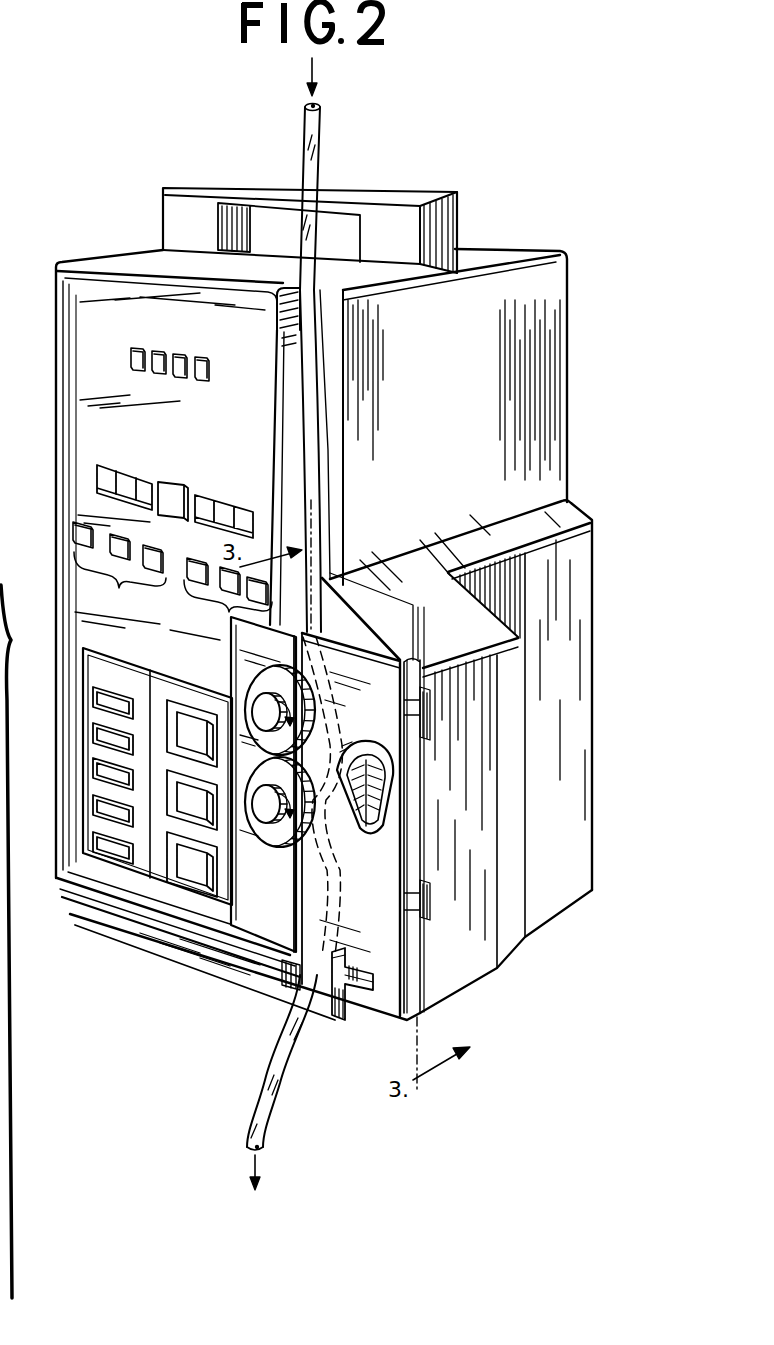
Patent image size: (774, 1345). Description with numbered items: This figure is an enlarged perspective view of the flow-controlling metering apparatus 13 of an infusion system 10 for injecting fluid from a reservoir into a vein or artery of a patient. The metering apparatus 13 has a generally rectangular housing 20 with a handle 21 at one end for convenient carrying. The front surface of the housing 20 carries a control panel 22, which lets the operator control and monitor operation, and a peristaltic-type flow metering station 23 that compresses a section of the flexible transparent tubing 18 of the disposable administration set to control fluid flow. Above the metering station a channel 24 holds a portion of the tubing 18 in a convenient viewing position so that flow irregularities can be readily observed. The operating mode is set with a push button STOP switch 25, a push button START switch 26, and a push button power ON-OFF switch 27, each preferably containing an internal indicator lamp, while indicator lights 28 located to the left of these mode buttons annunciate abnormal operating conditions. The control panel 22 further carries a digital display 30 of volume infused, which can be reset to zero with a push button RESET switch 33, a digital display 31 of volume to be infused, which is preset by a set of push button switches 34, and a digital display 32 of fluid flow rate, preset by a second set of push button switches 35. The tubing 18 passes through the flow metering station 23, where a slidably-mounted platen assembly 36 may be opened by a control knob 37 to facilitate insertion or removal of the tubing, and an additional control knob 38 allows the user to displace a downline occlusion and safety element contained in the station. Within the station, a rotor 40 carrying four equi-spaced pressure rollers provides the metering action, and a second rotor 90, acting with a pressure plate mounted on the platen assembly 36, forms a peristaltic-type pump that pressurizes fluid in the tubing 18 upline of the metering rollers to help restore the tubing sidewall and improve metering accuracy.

The infusion system 10 is at (22, 941).
The metering apparatus 13 is at (101, 250).
The tubing 18 is at (319, 145).
The housing 20 is at (530, 318).
The handle 21 is at (392, 215).
The control panel 22 is at (88, 345).
The flow metering station 23 is at (250, 915).
The channel 24 is at (283, 412).
The push button STOP switch 25 is at (185, 740).
The push button START switch 26 is at (185, 810).
The push button power ON-OFF switch 27 is at (196, 875).
The indicator lights 28 is at (102, 738).
The digital display of volume infused 30 is at (128, 360).
The digital display of volume to be infused 31 is at (98, 476).
The digital display of fluid flow rate 32 is at (205, 500).
The push button RESET switch 33 is at (175, 497).
The set of push button switches 34 is at (119, 565).
The second set of push button switches 35 is at (228, 595).
The platen assembly 36 is at (380, 856).
The control knob 37 is at (372, 793).
The additional control knob 38 is at (350, 990).
The rotor 40 is at (263, 812).
The second rotor 90 is at (323, 693).